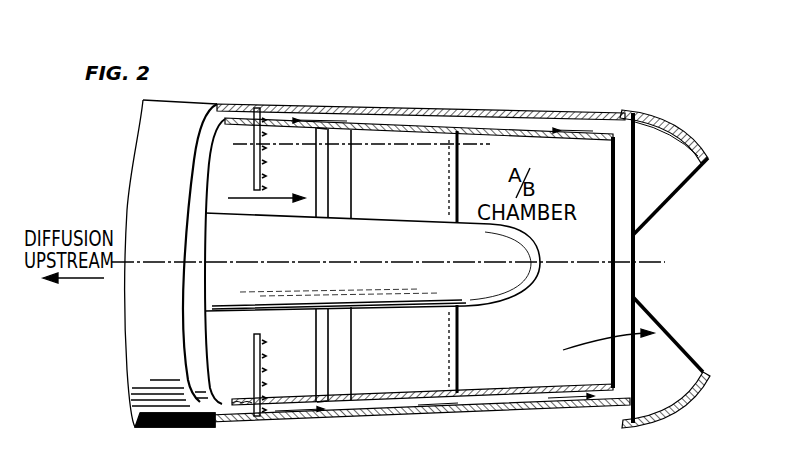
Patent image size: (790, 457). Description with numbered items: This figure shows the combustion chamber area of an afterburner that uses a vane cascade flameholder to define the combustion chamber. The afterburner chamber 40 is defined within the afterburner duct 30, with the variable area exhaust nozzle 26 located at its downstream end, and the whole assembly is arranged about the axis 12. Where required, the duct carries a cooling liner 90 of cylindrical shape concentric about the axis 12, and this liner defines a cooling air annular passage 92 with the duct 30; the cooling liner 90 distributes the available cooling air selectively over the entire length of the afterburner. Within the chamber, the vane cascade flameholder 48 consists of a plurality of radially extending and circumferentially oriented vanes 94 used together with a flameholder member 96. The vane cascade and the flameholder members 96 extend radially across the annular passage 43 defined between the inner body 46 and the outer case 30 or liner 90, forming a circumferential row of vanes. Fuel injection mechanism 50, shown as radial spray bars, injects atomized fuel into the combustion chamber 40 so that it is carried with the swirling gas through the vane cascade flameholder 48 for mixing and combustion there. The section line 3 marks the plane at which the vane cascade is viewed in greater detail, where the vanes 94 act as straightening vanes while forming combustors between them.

The section line 3- 3 is at (233, 148).
The axis 12 is at (655, 262).
The variable area exhaust nozzle 26 is at (686, 134).
The afterburner duct 30 is at (455, 117).
The afterburner chamber 40 is at (242, 186).
The annular passage 43 is at (281, 136).
The inner body 46 is at (495, 283).
The vane cascade flameholder 48 is at (417, 147).
The fuel injection mechanism 50 is at (247, 108).
The cooling liner 90 is at (509, 393).
The cooling air annular passage 92 is at (405, 404).
The vanes 94 is at (402, 140).
The flameholder member 96 is at (344, 136).